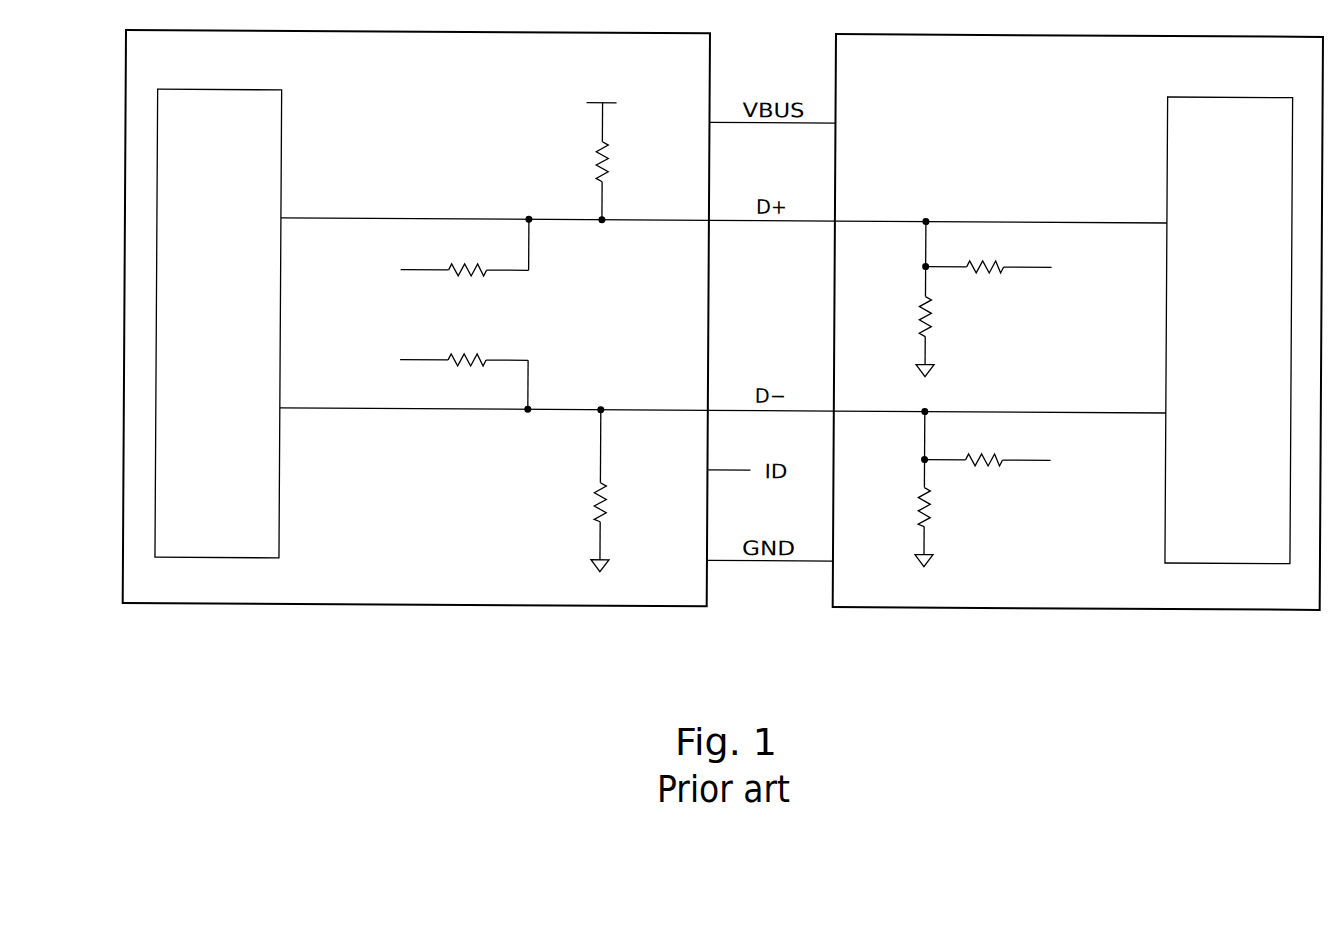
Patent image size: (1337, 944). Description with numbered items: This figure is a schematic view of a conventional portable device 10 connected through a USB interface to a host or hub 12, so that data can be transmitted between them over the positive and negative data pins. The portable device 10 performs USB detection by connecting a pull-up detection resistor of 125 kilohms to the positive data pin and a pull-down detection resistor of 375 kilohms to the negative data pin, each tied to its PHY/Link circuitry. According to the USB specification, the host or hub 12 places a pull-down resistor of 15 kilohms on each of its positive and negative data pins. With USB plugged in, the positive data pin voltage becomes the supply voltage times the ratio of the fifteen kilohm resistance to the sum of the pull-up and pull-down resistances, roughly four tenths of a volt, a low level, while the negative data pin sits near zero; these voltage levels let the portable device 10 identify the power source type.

The portable device 10 is at (437, 351).
The host or hub 12 is at (1077, 351).
The 125k ohm D+ pull-up detection resistor RDP_UP_DET 125 is at (592, 149).
The 375k ohm D- pull-down detection resistor RDM_DWN_DET 375 is at (583, 489).
The 15k ohm data line pull-down resistors RDAT_DWN_15K 15 is at (948, 431).